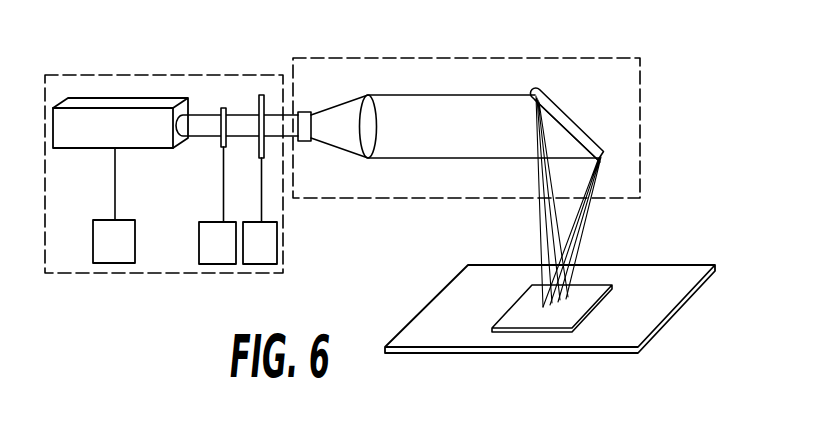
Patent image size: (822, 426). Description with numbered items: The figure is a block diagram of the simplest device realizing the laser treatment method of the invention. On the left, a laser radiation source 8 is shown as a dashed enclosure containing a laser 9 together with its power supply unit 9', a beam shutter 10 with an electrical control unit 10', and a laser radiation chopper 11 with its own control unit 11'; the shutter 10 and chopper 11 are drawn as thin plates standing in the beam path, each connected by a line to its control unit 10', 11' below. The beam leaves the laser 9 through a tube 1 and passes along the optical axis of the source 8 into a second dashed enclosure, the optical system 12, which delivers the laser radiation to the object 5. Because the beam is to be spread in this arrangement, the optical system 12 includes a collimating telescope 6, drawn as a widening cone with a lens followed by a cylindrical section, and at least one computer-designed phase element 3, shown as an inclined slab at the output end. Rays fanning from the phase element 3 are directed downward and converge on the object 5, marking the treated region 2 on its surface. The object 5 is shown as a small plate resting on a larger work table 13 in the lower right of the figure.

The laser beam tube 1 is at (210, 106).
The irradiated spot on specimen 2 is at (571, 303).
The computer-designed phase element 3 is at (559, 107).
The object 5 is at (583, 314).
The collimating telescope 6 is at (338, 88).
The laser radiation source 8 is at (154, 70).
The laser 9 is at (120, 159).
The power supply unit 9' is at (114, 243).
The beam shutter 10 is at (203, 165).
The electrical control unit 10' is at (217, 243).
The laser radiation chopper 11 is at (246, 158).
The control unit 11' is at (260, 243).
The optical system 12 is at (582, 44).
The work table 13 is at (654, 335).